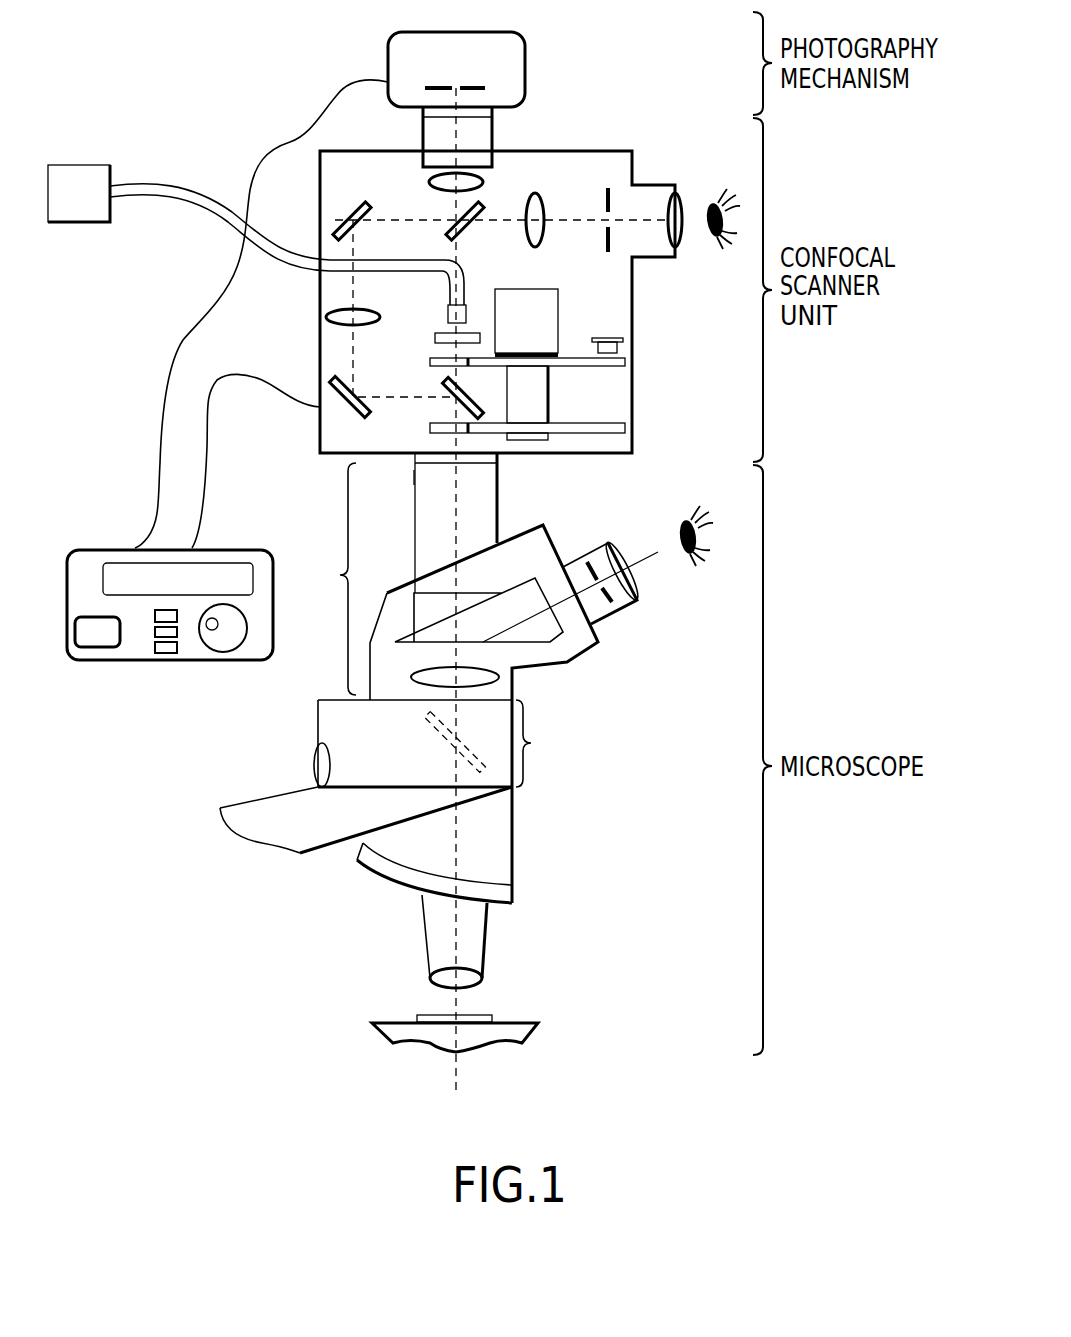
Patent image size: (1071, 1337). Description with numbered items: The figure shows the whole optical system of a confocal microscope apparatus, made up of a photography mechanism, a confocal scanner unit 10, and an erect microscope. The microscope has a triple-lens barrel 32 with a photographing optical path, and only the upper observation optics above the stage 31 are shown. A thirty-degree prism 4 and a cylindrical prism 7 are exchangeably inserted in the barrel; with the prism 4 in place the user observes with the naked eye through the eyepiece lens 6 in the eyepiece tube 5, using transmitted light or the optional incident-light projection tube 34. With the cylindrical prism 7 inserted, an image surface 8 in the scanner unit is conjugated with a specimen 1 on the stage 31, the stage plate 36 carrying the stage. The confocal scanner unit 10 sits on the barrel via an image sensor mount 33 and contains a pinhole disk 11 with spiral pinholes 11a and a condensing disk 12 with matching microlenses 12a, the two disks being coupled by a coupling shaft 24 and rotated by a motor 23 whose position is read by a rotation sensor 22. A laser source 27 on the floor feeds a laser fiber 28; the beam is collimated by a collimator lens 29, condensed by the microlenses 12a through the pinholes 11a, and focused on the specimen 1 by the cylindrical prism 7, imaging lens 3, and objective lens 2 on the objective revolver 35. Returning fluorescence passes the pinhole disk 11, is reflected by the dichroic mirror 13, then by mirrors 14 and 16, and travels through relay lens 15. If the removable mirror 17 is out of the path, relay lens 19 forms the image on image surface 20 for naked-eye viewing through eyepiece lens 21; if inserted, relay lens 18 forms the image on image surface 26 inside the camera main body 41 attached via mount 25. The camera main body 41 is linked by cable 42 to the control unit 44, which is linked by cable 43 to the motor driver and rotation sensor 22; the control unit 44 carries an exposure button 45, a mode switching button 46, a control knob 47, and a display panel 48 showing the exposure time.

The specimen 1 is at (492, 1015).
The objective lens 2 is at (485, 945).
The imaging lens 3 is at (500, 677).
The 30° prism 4 is at (580, 655).
The eyepiece tube 5 is at (620, 615).
The eyepiece lens 6 is at (633, 590).
The cylindrical prism 7 is at (406, 596).
The image surface 8 is at (414, 462).
The confocal scanner unit 10 is at (320, 204).
The pinhole disk 11 is at (610, 433).
The pinhole 11a is at (432, 425).
The condensing disk 12 is at (625, 362).
The microlens 12a is at (432, 365).
The dichroic mirror 13 is at (462, 387).
The mirror 14 is at (332, 380).
The relay lens 15 is at (325, 318).
The mirror 16 is at (335, 235).
The mirror 17 is at (482, 205).
The relay lens 18 is at (428, 183).
The relay lens 19 is at (540, 198).
The image surface 20 is at (612, 190).
The eyepiece lens 21 is at (676, 194).
The rotation sensor 22 is at (625, 345).
The motor 23 is at (560, 302).
The coupling shaft 24 is at (548, 395).
The mount 25 is at (492, 117).
The image surface 26 is at (430, 86).
The laser source 27 is at (78, 165).
The laser fiber 28 is at (198, 222).
The collimator lens 29 is at (435, 338).
The stage 31 is at (538, 1022).
The triple-lens barrel 32 is at (330, 579).
The image sensor mount 33 is at (414, 485).
The incident-light projection tube 34 is at (441, 743).
The objective revolver 35 is at (512, 840).
The stage plate 36 is at (285, 800).
The camera main body 41 is at (525, 78).
The cable 42 is at (163, 358).
The cable 43 is at (207, 432).
The control unit 44 is at (97, 548).
The exposure button 45 is at (95, 650).
The mode switching button 46 is at (160, 655).
The control knob 47 is at (222, 655).
The display panel 48 is at (240, 563).